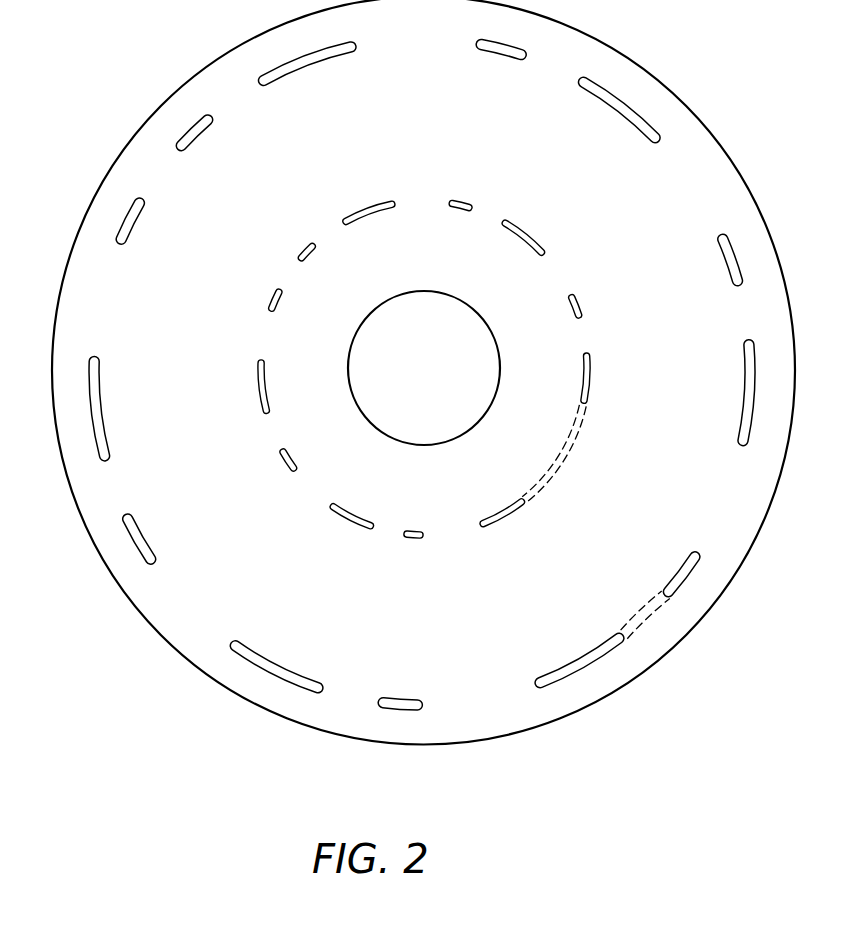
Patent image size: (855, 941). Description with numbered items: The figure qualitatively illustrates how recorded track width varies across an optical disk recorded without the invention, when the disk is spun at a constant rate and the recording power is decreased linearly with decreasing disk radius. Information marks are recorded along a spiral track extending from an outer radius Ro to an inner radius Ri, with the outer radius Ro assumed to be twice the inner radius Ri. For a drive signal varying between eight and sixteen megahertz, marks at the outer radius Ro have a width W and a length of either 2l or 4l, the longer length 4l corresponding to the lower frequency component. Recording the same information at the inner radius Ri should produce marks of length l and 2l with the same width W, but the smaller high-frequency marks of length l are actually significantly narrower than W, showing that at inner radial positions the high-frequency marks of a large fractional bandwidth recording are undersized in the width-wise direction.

The outer radius Ro is at (423, 367).
The inner radius Ri is at (423, 367).
The width W is at (603, 443).
The length l is at (436, 548).
The length 2l is at (370, 548).
The length 4l is at (317, 715).